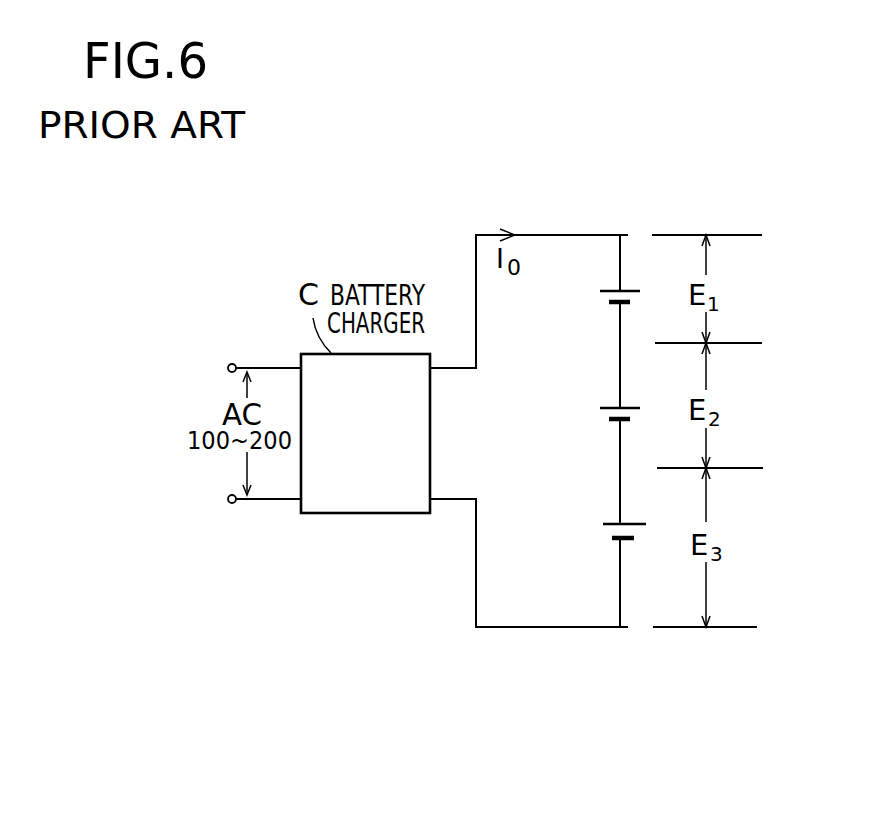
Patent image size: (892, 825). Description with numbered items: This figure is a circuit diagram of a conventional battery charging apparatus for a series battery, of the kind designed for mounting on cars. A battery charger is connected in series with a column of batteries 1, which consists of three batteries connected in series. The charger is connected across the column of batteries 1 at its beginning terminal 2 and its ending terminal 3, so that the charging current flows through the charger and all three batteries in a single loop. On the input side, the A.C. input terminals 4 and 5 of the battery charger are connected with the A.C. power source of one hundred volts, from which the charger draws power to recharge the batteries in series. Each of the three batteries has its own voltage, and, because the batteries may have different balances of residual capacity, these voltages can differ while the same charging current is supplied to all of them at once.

The column of batteries 1 is at (580, 382).
The beginning terminal 2 is at (622, 234).
The ending terminal 3 is at (621, 630).
The A.C. input terminal 4 is at (236, 363).
The A.C. input terminal 5 is at (236, 504).